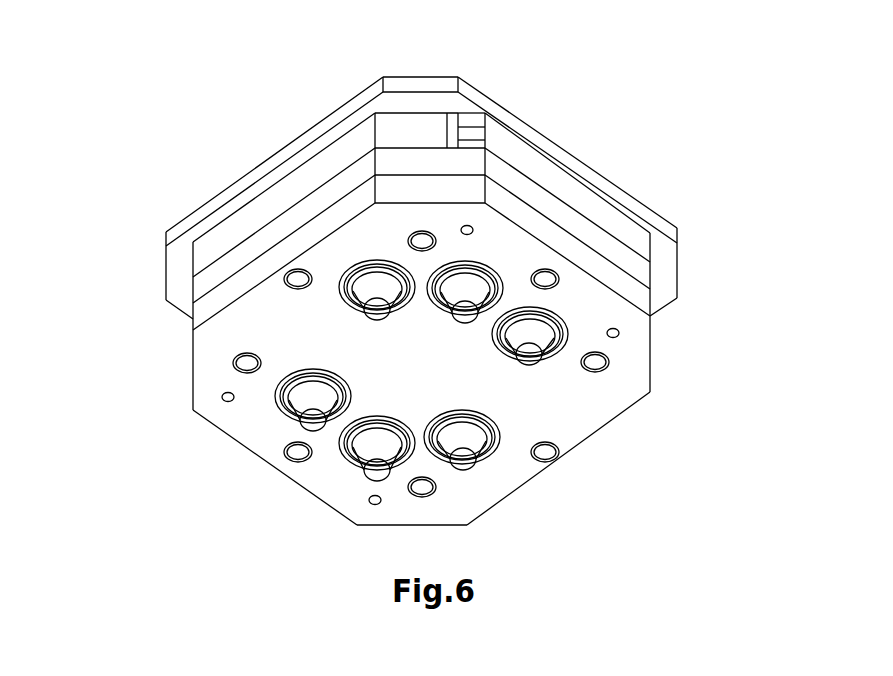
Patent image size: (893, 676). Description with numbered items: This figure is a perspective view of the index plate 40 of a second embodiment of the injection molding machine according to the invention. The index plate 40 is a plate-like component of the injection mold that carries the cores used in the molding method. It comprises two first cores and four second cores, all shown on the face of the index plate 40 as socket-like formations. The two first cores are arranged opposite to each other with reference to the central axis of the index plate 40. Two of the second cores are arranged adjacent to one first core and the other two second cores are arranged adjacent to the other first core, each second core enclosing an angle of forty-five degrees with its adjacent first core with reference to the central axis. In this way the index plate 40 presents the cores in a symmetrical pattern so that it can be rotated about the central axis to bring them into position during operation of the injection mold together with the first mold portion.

The index plate 40 is at (212, 355).